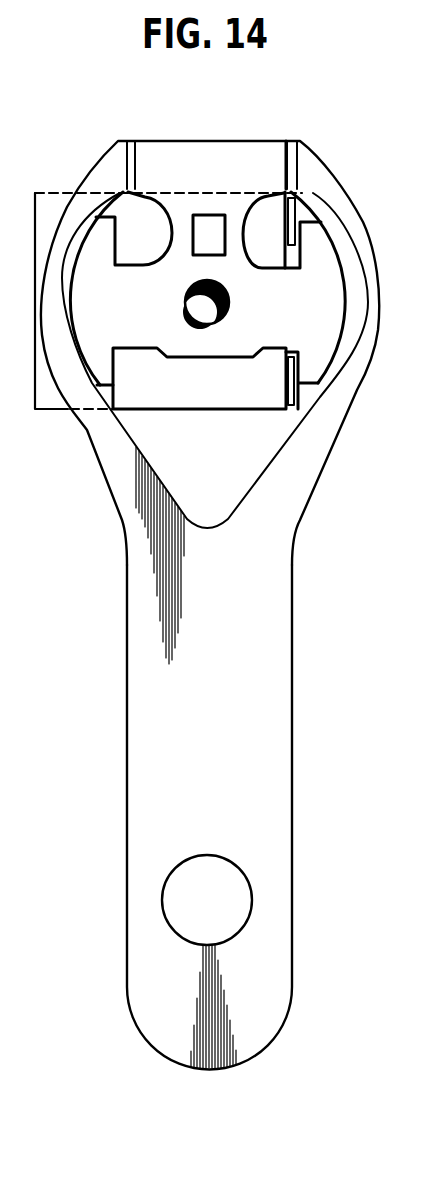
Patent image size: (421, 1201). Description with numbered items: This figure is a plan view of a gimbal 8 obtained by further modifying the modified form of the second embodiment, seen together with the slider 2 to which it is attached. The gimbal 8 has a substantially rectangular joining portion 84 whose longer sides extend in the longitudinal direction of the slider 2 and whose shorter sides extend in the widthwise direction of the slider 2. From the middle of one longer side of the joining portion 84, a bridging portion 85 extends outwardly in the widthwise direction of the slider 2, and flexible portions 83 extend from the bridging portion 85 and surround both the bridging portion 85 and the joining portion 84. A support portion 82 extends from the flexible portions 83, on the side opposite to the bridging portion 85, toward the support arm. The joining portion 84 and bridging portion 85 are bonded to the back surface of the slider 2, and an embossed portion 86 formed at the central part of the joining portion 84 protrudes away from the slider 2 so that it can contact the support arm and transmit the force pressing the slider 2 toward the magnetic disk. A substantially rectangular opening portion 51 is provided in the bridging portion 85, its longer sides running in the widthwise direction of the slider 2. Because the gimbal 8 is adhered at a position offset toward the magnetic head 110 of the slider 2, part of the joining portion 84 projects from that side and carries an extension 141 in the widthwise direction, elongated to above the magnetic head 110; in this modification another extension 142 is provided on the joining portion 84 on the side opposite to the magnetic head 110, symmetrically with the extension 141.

The slider 2 is at (123, 194).
The gimbal 8 is at (295, 655).
The opening portion 51 is at (209, 225).
The support portion 82 is at (282, 763).
The flexible portions 83 is at (40, 337).
The joining portion 84 is at (198, 370).
The bridging portion 85 is at (153, 214).
The embossed portion 86 is at (187, 303).
The magnetic head 110 is at (297, 216).
The extension 141 is at (93, 318).
The another extension 142 is at (318, 323).